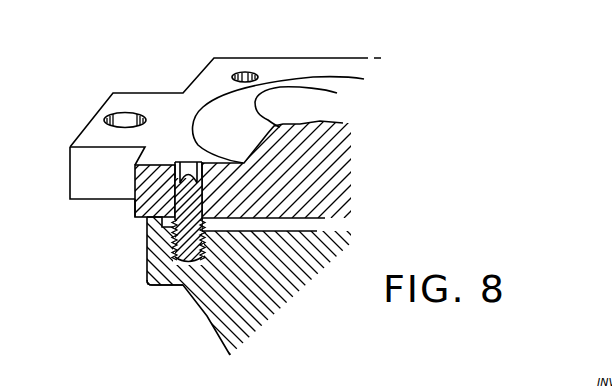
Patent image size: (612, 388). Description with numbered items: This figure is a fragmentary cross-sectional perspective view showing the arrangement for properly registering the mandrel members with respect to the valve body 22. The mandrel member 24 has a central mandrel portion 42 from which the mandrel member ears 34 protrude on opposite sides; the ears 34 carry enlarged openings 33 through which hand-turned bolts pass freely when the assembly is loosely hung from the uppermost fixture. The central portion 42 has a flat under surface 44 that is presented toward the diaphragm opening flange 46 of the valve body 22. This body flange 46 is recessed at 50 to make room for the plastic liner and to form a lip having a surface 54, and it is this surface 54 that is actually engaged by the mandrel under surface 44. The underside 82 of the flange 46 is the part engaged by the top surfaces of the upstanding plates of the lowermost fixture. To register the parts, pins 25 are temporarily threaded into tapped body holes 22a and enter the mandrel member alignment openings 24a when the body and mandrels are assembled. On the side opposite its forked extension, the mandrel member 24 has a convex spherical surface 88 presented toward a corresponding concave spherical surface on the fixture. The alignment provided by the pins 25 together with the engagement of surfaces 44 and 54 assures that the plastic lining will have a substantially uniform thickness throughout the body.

The metal diaphragm valve body 22 is at (192, 319).
The tapped body holes 22a is at (183, 255).
The mandrel member 24 is at (120, 214).
The mandrel member alignment openings 24a is at (247, 73).
The pins 25 is at (188, 160).
The enlarged openings 33 is at (118, 113).
The mandrel member ears 34 is at (77, 173).
The central mandrel portion 42 is at (325, 184).
The under surface 44 is at (140, 221).
The diaphragm opening flange 46 is at (157, 250).
The recess 50 is at (218, 224).
The lip surface 54 is at (156, 210).
The underside of body flange 82 is at (163, 288).
The convex spherical surface 88 is at (227, 102).